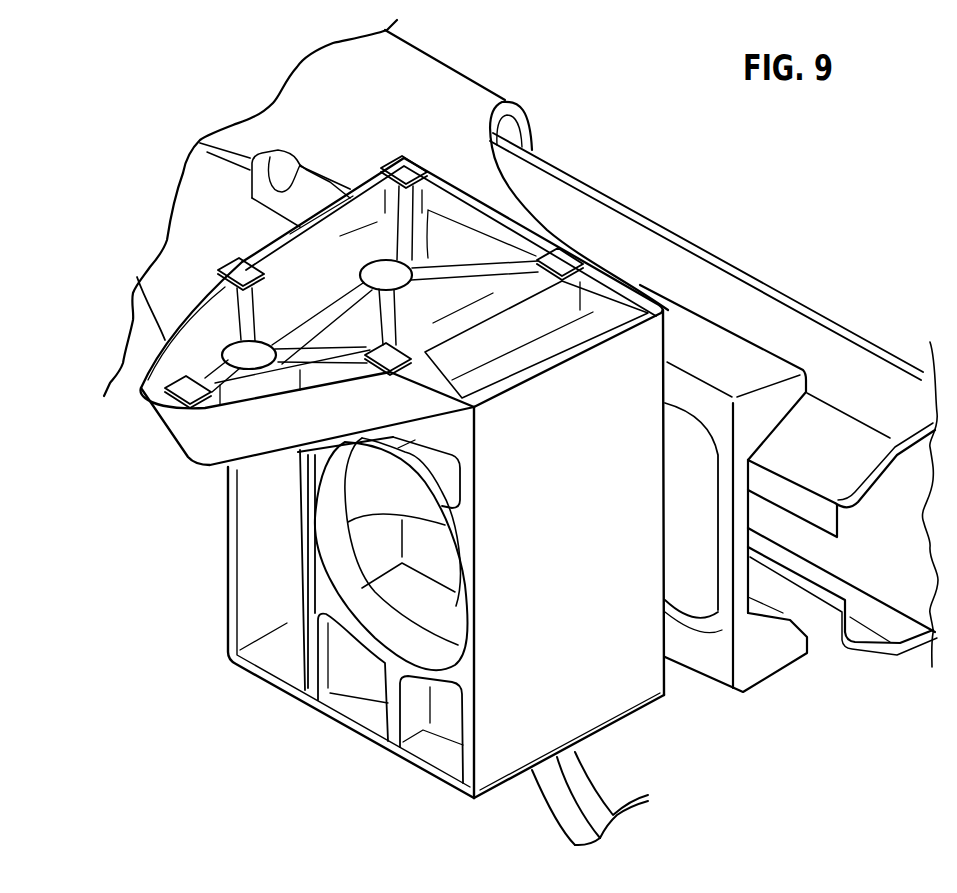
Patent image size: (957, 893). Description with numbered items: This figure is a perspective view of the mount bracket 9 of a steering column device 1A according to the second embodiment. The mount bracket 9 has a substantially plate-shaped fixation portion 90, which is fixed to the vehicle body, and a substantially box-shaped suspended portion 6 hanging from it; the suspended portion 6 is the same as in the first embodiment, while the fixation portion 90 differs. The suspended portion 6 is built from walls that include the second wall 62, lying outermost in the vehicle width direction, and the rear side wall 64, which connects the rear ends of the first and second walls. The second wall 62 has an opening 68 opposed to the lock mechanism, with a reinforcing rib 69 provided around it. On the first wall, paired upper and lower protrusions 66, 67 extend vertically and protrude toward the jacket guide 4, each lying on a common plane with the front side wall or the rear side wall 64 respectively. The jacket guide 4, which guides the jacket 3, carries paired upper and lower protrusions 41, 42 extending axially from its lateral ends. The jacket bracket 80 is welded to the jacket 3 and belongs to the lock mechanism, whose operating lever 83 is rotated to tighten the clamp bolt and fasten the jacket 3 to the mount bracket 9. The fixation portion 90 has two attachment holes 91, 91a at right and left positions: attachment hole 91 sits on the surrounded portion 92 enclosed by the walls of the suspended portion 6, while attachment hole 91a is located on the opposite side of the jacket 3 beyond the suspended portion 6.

The steering column device 1A is at (845, 185).
The jacket 3 is at (855, 363).
The jacket guide 4 is at (455, 90).
The upper protrusion 41 is at (254, 143).
The lower protrusion 42 is at (133, 343).
The suspended portion 6 is at (228, 533).
The second wall 62 is at (300, 617).
The rear side wall 64 is at (640, 702).
The upper protrusion 66 is at (492, 136).
The lower protrusion 67 is at (646, 284).
The opening 68 is at (456, 560).
The reinforcing rib 69 is at (363, 657).
The jacket bracket 80 is at (712, 353).
The operating lever 83 is at (613, 807).
The mount bracket 9 is at (157, 483).
The fixation portion 90 is at (200, 440).
The attachment hole 91 is at (343, 296).
The attachment hole 91a is at (238, 348).
The surrounded portion 92 is at (427, 240).